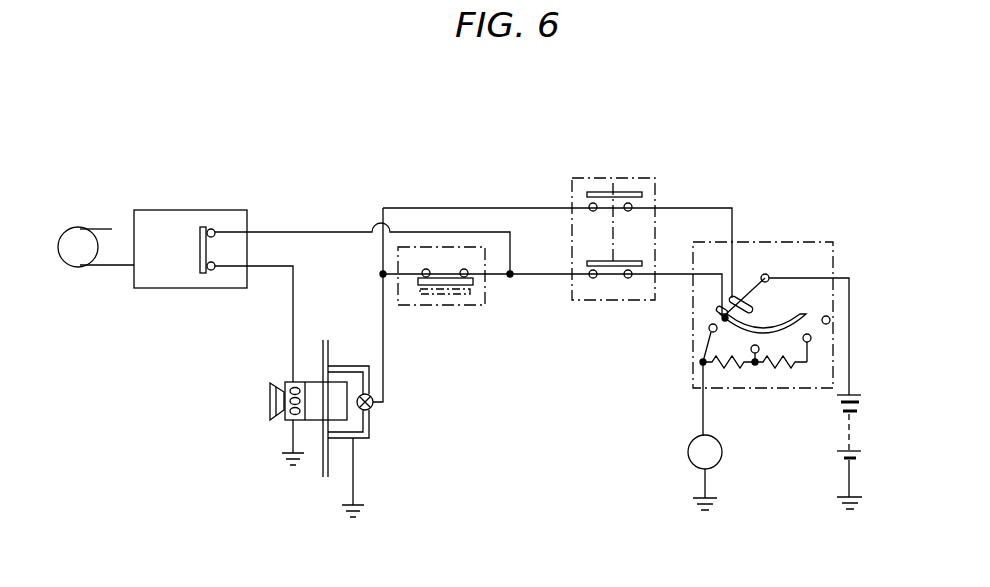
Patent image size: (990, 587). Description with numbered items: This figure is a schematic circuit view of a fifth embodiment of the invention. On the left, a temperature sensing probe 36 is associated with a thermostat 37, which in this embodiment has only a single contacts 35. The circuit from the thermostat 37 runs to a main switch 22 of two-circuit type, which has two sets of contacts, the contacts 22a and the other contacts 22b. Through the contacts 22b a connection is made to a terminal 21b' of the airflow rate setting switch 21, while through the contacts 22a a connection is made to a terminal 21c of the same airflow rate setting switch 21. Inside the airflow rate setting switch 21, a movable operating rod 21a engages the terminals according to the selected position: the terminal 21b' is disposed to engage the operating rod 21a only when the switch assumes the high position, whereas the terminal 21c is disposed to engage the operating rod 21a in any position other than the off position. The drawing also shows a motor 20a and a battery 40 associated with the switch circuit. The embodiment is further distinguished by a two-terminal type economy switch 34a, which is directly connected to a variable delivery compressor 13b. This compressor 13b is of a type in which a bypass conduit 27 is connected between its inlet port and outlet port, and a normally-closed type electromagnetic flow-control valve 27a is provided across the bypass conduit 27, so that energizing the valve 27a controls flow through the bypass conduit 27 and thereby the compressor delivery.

The temperature sensing probe 36 is at (80, 258).
The thermostat 37 is at (192, 217).
The contacts 35 is at (197, 240).
The economy switch 34a is at (453, 305).
The main switch 22 is at (607, 232).
The contacts of the main switch 22a is at (608, 276).
The contacts of the main switch 22b is at (607, 210).
The airflow rate setting switch 21 is at (815, 238).
The operating rod 21a is at (752, 289).
The terminal 21b' is at (745, 263).
The terminal 21c is at (806, 316).
The blower motor 20a is at (722, 452).
The battery 40 is at (863, 425).
The variable delivery compressor 13b is at (317, 413).
The bypass conduit 27 is at (370, 436).
The electromagnetic flow-control valve 27a is at (375, 407).